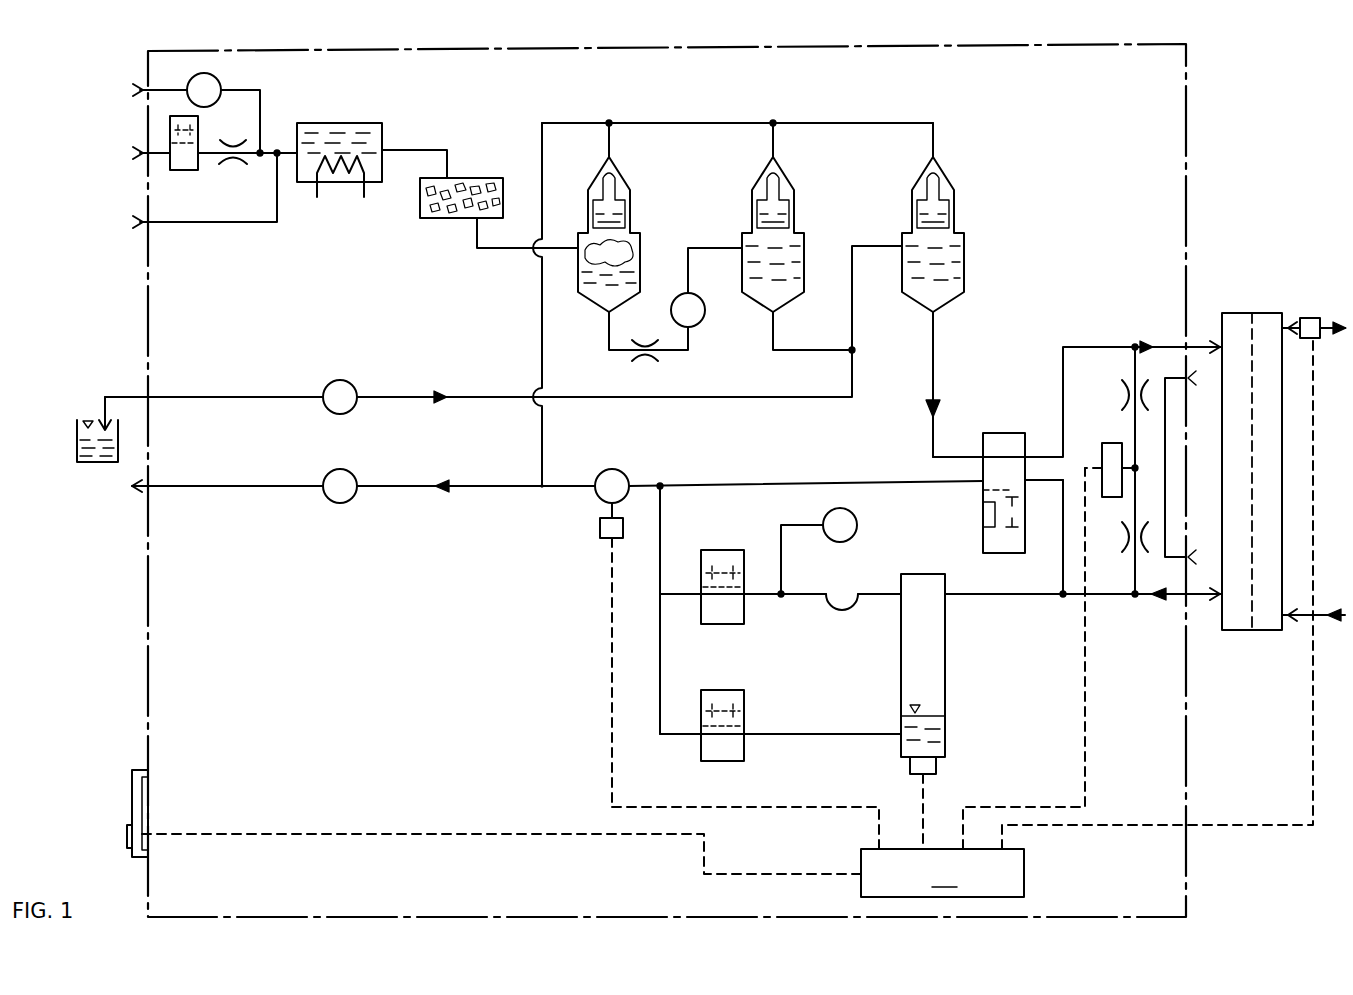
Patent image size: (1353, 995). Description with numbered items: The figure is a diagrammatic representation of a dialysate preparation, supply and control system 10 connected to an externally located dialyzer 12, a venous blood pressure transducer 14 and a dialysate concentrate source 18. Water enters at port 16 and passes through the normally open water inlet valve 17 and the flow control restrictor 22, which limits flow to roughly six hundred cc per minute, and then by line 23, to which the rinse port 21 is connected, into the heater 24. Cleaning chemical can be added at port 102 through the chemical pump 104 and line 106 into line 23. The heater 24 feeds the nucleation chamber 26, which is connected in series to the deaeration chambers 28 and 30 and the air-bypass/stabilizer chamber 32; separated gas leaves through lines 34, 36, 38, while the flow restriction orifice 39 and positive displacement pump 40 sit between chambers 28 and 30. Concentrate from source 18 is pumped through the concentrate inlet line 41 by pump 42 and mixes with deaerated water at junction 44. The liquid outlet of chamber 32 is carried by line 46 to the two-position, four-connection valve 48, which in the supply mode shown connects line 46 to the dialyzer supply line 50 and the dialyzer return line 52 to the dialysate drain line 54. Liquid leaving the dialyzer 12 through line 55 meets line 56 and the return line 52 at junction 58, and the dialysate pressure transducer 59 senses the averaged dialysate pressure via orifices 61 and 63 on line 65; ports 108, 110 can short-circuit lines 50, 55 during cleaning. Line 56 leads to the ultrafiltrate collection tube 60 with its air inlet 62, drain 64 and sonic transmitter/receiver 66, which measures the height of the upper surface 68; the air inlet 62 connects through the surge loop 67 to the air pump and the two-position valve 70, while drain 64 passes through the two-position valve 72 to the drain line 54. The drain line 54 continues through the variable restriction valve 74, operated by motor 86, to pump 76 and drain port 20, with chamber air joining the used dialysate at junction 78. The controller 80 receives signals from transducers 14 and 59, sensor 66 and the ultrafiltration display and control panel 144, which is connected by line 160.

The dialysate preparation, supply and control system 10 is at (1186, 130).
The dialyzer 12 is at (1258, 312).
The venous blood pressure transducer 14 is at (1312, 316).
The port 16 is at (128, 153).
The water inlet valve 17 is at (187, 172).
The dialysate concentrate source 18 is at (96, 408).
The drain port 20 is at (128, 492).
The rinse port 21 is at (140, 223).
The flow control restrictor 22 is at (233, 160).
The line 23 is at (288, 150).
The heater 24 is at (383, 125).
The nucleation chamber 26 is at (481, 177).
The deaeration chamber 28 is at (646, 236).
The deaeration chamber 30 is at (806, 236).
The air-bypass/stabilizer chamber 32 is at (966, 236).
The line 34 is at (610, 132).
The line 36 is at (774, 126).
The line 38 is at (935, 140).
The flow restriction orifice 39 is at (648, 358).
The positive displacement pump 40 is at (704, 318).
The concentrate inlet line 41 is at (228, 396).
The pump 42 is at (358, 390).
The junction 44 is at (855, 352).
The line 46 is at (938, 392).
The two-position, four-connection valve 48 is at (983, 492).
The dialyzer supply line 50 is at (1048, 455).
The dialyzer return line 52 is at (1054, 483).
The dialysate drain line 54 is at (862, 478).
The line 55 is at (1171, 600).
The line 56 is at (963, 598).
The junction 58 is at (1068, 598).
The dialysate pressure transducer 59 is at (1102, 445).
The ultrafiltrate collection tube 60 is at (947, 679).
The orifice 61 is at (1122, 396).
The air inlet 62 is at (900, 599).
The orifice 63 is at (1126, 546).
The drain 64 is at (900, 731).
The line 65 is at (1134, 500).
The sonic transmitter/receiver 66 is at (938, 770).
The surge loop 67 is at (834, 614).
The upper surface 68 is at (824, 516).
The two-position valve 70 is at (720, 550).
The two-position valve 72 is at (724, 762).
The variable restriction valve 74 is at (620, 469).
The pump 76 is at (336, 504).
The junction 78 is at (540, 489).
The controller 80 is at (726, 617).
The motor 86 is at (600, 540).
The port 102 is at (138, 89).
The chemical pump 104 is at (219, 82).
The line 106 is at (262, 107).
The port 108 is at (1191, 386).
The port 110 is at (1191, 551).
The ultrafiltration display and control panel 144 is at (133, 810).
The line 160 is at (420, 832).